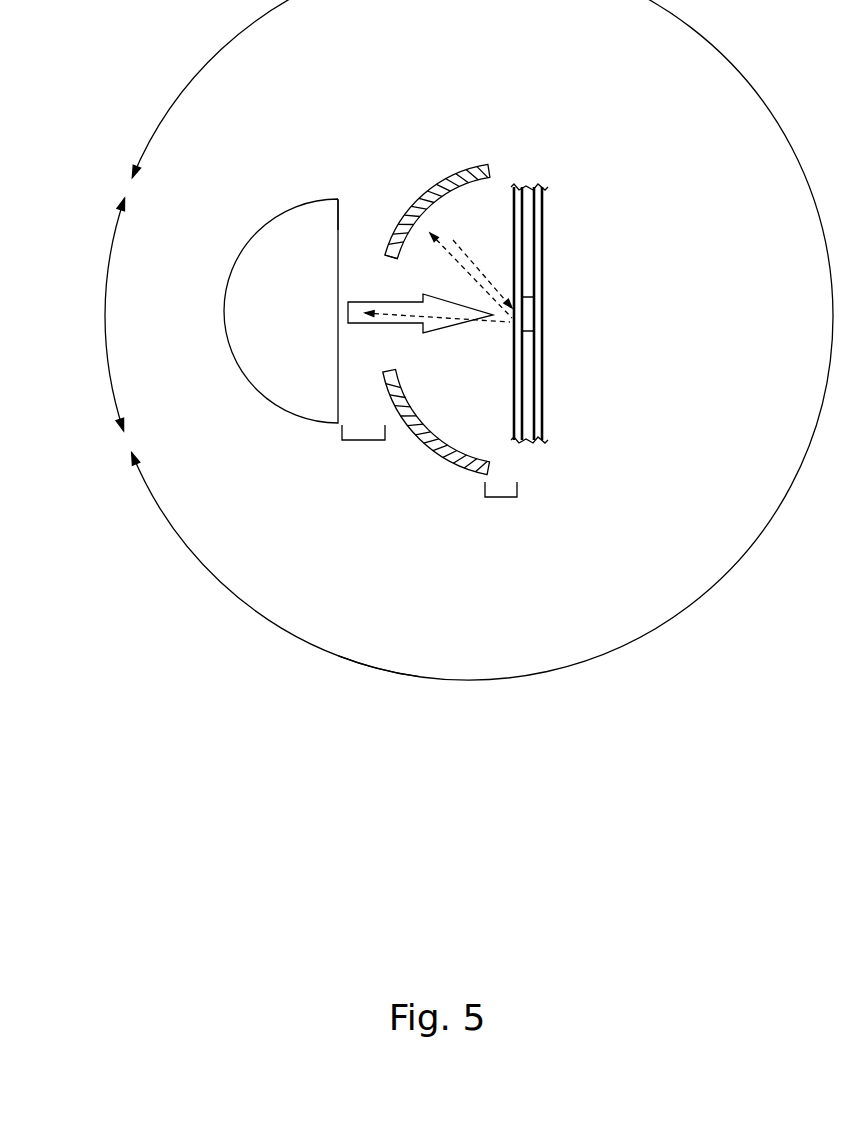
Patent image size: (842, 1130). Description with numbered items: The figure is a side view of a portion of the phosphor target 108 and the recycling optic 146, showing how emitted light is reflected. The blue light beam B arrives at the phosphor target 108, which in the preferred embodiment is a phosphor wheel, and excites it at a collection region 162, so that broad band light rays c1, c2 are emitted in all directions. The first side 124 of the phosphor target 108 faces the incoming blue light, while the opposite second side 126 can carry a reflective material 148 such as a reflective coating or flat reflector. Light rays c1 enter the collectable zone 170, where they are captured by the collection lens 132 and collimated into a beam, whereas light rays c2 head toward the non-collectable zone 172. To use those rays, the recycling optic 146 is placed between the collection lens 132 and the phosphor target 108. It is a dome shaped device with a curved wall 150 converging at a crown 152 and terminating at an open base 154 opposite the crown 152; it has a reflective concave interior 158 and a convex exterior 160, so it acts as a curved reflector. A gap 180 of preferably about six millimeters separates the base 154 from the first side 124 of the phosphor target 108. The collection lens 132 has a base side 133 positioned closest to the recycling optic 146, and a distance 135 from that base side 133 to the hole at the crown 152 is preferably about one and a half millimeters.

The phosphor target 108 is at (537, 169).
The first side 124 is at (514, 387).
The second side 126 is at (543, 217).
The collection lens 132 is at (292, 390).
The base side 133 is at (327, 193).
The distance 135 is at (360, 441).
The recycling optic 146 is at (435, 450).
The reflective material 148 is at (543, 397).
The curved wall 150 is at (406, 206).
The crown 152 is at (365, 238).
The base 154 is at (470, 161).
The concave interior 158 is at (465, 448).
The convex exterior 160 is at (450, 482).
The collection region 162 is at (537, 318).
The collectable zone 170 is at (104, 313).
The non-collectable zone 172 is at (376, 668).
The gap 180 is at (500, 497).
The blue light beam B is at (368, 330).
The broad band light rays c1 is at (406, 301).
The broad band light rays c2 is at (456, 242).